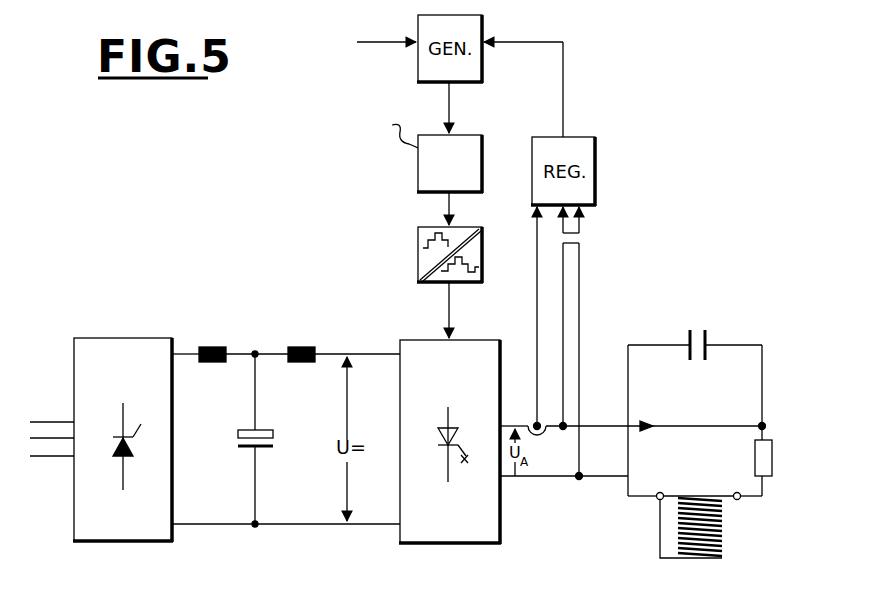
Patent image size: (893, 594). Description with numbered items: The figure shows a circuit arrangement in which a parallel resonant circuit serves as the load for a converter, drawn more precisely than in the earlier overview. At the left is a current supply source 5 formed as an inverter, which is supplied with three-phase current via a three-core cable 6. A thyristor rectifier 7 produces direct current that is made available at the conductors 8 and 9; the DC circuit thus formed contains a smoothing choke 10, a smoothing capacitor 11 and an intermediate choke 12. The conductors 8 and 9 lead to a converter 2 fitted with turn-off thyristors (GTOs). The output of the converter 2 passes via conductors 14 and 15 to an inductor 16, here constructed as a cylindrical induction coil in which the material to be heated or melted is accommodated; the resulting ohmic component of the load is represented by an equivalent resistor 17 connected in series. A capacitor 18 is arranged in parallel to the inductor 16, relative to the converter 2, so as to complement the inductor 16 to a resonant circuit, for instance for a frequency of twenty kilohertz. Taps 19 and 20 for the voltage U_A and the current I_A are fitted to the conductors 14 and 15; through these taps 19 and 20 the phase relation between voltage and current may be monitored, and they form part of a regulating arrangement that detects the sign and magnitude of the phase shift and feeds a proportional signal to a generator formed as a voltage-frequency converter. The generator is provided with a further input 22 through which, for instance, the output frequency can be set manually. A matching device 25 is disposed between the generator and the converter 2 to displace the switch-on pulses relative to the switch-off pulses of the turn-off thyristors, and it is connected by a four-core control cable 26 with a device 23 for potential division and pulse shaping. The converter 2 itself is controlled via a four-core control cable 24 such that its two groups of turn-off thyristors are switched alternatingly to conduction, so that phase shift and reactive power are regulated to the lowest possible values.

The converter 2 is at (447, 545).
The current supply source 5 is at (255, 302).
The three-core cable 6 is at (49, 410).
The thyristor rectifier 7 is at (121, 346).
The conductor 8 is at (356, 353).
The conductor 9 is at (352, 527).
The smoothing choke 10 is at (213, 347).
The smoothing capacitor 11 is at (265, 427).
The intermediate choke 12 is at (301, 347).
The conductor 14 is at (597, 425).
The conductor 15 is at (540, 478).
The inductor 16 is at (730, 530).
The equivalent resistor 17 is at (755, 460).
The capacitor 18 is at (702, 317).
The tap 19 is at (564, 442).
The tap 20 is at (527, 416).
The further input 22 is at (378, 43).
The device for potential division and pulse shaping 23 is at (418, 252).
The four-core control cable 24 is at (449, 308).
The matching device 25 is at (418, 166).
The four-core control cable 26 is at (445, 212).